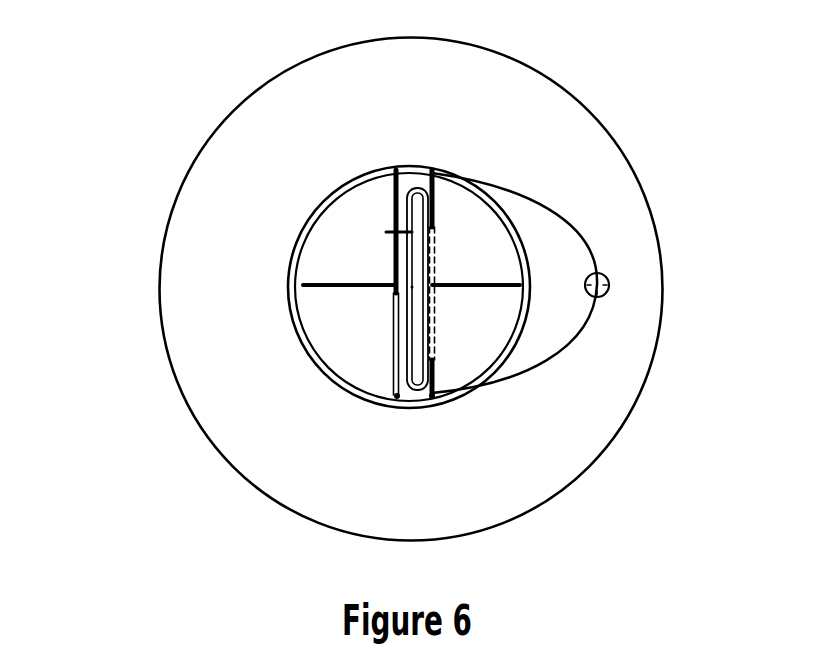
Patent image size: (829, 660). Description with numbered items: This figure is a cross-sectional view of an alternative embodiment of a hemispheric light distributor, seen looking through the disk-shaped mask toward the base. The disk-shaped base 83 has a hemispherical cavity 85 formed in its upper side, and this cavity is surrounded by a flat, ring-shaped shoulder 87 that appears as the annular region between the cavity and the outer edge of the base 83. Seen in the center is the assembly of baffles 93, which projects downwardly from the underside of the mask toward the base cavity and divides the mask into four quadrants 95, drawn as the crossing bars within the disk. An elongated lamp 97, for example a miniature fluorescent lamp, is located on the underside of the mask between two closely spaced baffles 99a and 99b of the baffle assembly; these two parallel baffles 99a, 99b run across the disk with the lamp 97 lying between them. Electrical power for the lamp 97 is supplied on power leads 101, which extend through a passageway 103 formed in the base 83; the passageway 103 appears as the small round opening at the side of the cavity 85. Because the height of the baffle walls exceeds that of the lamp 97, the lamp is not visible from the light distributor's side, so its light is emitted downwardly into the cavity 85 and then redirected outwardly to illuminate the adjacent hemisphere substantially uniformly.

The disk-shaped base 83 is at (567, 488).
The hemispherical cavity 85 is at (528, 267).
The ring-shaped shoulder 87 is at (600, 417).
The assembly of baffles 93 is at (493, 281).
The quadrants 95 is at (330, 313).
The elongated lamp 97 is at (386, 232).
The baffle 99a is at (397, 397).
The baffle 99b is at (432, 396).
The power leads 101 is at (478, 192).
The passageway 103 is at (609, 290).